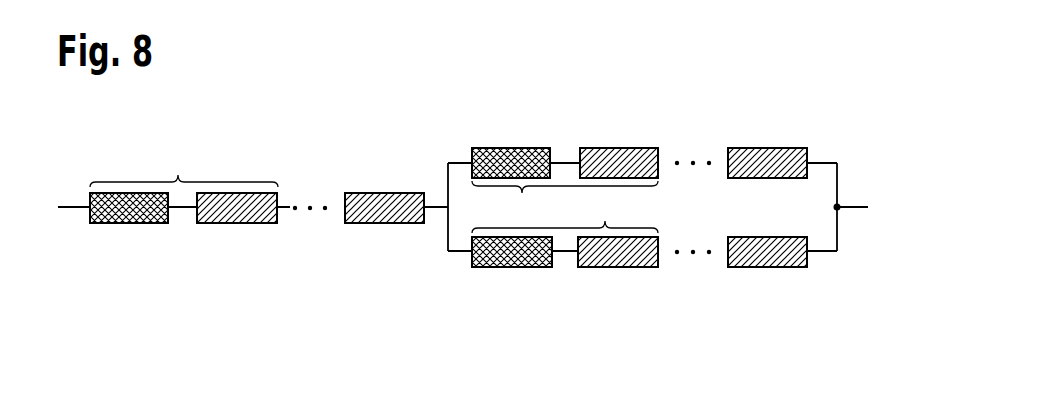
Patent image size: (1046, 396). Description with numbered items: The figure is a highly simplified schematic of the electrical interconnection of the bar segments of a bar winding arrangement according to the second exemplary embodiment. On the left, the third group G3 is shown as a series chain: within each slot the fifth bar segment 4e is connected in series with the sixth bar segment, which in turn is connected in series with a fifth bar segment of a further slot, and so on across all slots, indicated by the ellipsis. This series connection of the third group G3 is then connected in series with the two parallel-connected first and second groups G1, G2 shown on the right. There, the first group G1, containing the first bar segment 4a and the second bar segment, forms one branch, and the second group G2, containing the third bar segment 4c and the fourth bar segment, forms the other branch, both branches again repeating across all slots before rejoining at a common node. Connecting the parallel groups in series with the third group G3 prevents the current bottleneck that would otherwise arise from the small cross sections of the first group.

The first bar segment 4a is at (512, 257).
The third bar segment 4c is at (513, 155).
The fifth bar segment 4e is at (128, 212).
The first group G1 is at (565, 213).
The second group G2 is at (565, 203).
The third group G3 is at (184, 164).